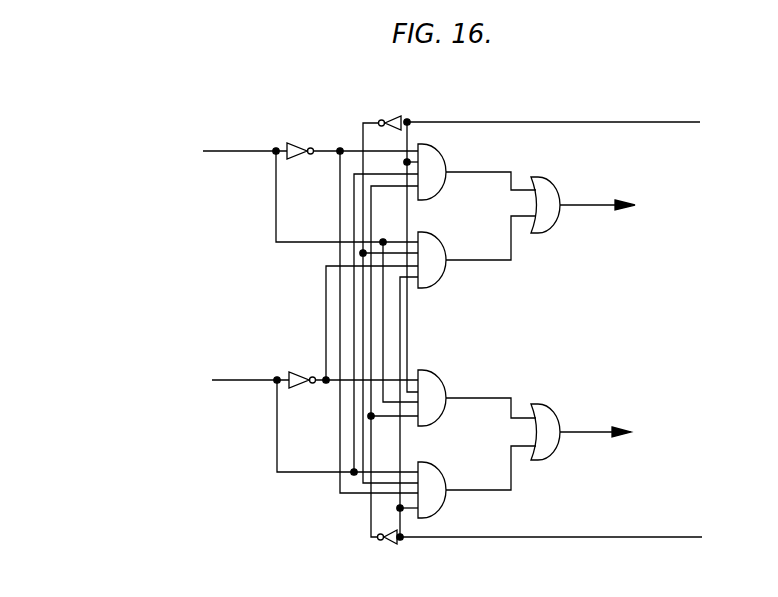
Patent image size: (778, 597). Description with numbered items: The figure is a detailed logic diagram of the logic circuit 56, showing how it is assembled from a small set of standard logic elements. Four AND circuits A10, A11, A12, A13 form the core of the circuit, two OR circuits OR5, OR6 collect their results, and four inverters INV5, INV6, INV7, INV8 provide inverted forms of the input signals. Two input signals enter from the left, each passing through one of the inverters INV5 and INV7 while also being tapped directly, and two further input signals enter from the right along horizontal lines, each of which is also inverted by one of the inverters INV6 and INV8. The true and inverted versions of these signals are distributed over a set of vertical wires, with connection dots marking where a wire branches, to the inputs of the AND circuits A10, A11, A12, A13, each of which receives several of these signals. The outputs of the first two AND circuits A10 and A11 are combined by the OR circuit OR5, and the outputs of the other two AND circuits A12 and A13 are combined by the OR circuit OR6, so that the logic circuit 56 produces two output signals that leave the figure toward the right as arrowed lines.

The logic circuit 56 is at (659, 194).
The inverter INV5 is at (297, 139).
The inverter INV6 is at (405, 109).
The inverter INV7 is at (292, 365).
The inverter INV8 is at (388, 552).
The AND circuit A10 is at (452, 170).
The AND circuit A11 is at (452, 256).
The AND circuit A12 is at (451, 395).
The AND circuit A13 is at (451, 487).
The OR circuit OR5 is at (562, 195).
The OR circuit OR6 is at (562, 423).